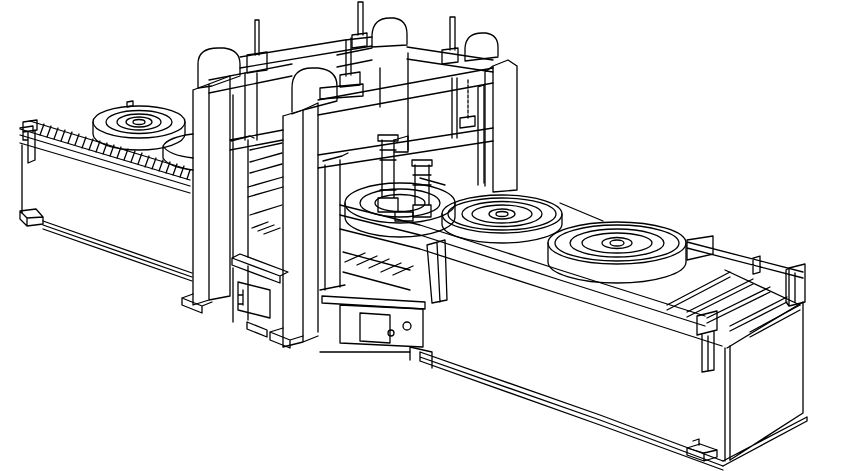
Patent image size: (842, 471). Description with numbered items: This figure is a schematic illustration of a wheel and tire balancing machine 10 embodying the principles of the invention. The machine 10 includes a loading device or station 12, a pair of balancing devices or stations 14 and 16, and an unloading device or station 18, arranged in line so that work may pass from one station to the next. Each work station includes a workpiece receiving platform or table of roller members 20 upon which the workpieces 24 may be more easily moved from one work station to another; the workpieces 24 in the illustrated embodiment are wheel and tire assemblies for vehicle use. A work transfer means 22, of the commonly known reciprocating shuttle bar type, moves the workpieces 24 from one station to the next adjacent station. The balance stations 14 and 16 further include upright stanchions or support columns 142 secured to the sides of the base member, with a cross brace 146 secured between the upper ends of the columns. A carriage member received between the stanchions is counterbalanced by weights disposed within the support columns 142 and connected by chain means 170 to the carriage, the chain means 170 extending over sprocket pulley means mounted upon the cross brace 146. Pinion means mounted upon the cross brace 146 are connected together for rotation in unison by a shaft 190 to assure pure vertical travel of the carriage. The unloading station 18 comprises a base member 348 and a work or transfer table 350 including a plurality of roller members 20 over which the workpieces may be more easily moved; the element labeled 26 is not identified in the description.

The machine 10 is at (520, 183).
The loading device or station 12 is at (509, 378).
The balancing device or station 14 is at (293, 328).
The balancing device or station 16 is at (203, 298).
The unloading device or station 18 is at (138, 240).
The roller members 20 is at (80, 134).
The work transfer means 22 is at (693, 252).
The workpieces 24 is at (592, 222).
The front conveyor rail 26 is at (663, 320).
The upright stanchion or support column 142 is at (203, 109).
The cross brace 146 is at (288, 72).
The chain means 170 is at (206, 88).
The shaft 190 is at (323, 34).
The base member 348 is at (63, 217).
The work or transfer table 350 is at (130, 170).